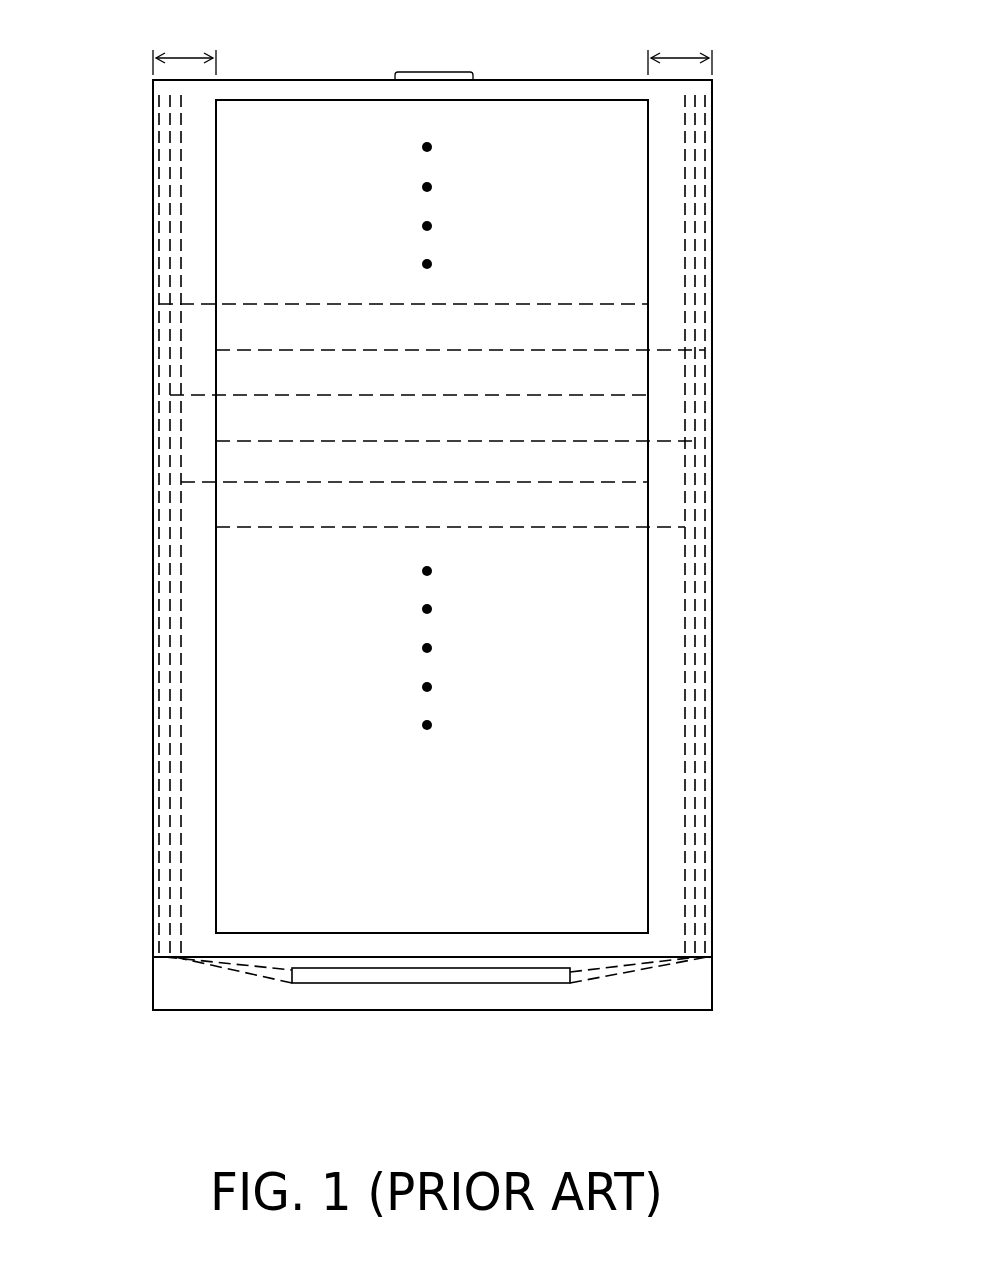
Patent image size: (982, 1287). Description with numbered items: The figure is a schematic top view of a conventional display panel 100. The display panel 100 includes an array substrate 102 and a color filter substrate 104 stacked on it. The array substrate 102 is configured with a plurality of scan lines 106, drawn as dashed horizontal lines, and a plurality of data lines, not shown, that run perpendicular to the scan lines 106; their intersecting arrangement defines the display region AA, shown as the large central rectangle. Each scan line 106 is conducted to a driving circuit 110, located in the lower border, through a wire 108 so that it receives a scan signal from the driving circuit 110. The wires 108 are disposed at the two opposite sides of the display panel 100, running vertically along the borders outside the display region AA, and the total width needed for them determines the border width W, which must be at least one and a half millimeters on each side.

The display panel 100 is at (435, 562).
The array substrate 102 is at (660, 1010).
The color filter substrate 104 is at (307, 93).
The scan lines 106 is at (582, 303).
The wire 108 is at (170, 452).
The driving circuit 110 is at (493, 975).
The display region AA is at (648, 663).